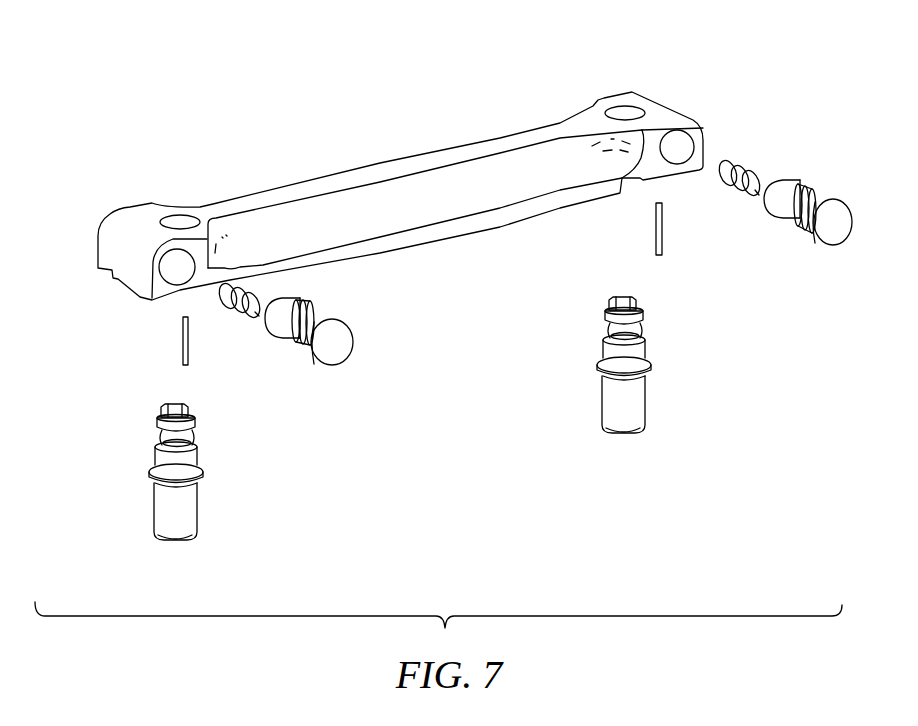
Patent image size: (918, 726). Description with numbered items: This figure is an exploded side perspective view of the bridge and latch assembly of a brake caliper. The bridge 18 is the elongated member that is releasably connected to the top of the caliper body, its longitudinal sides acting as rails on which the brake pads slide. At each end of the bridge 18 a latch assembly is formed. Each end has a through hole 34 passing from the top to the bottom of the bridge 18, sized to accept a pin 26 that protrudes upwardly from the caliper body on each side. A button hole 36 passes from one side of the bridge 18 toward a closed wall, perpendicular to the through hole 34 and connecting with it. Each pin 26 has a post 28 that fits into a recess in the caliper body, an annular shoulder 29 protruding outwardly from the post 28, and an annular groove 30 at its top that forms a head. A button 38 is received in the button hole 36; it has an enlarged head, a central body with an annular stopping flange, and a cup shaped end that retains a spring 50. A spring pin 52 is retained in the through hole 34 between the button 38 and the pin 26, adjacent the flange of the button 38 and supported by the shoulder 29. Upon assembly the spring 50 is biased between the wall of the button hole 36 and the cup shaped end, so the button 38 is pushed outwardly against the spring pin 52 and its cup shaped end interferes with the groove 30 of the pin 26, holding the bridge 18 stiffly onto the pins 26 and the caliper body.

The bridge 18 is at (495, 135).
The pin 26 is at (688, 362).
The post 28 is at (170, 527).
The annular shoulder 29 is at (207, 460).
The annular groove 30 is at (158, 433).
The through hole 34 is at (637, 118).
The button hole 36 is at (682, 150).
The button 38 is at (337, 331).
The spring 50 is at (235, 310).
The spring pin 52 is at (183, 343).